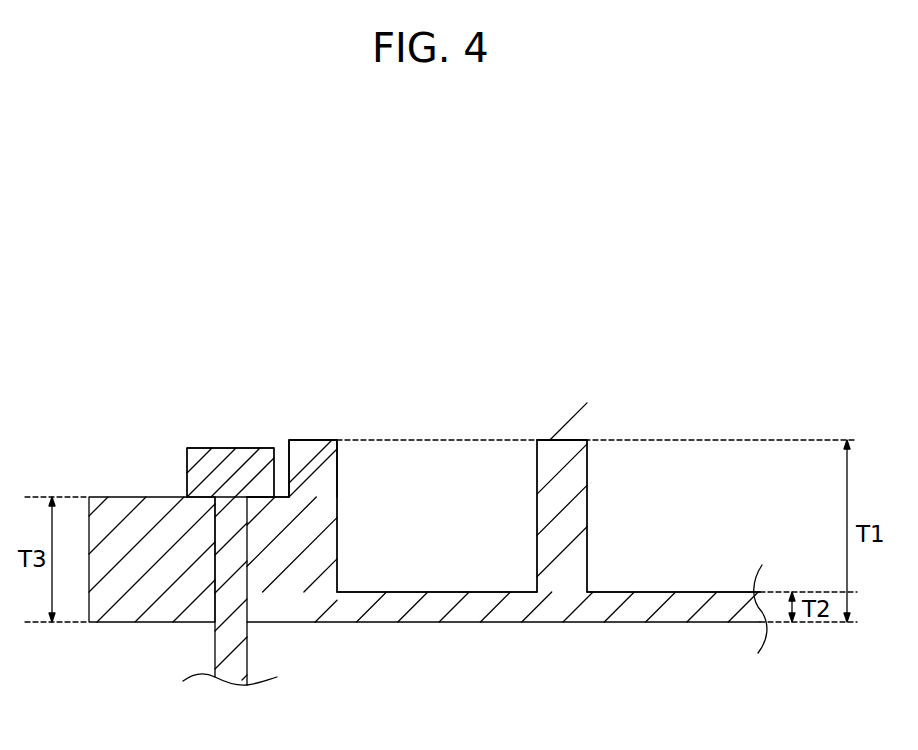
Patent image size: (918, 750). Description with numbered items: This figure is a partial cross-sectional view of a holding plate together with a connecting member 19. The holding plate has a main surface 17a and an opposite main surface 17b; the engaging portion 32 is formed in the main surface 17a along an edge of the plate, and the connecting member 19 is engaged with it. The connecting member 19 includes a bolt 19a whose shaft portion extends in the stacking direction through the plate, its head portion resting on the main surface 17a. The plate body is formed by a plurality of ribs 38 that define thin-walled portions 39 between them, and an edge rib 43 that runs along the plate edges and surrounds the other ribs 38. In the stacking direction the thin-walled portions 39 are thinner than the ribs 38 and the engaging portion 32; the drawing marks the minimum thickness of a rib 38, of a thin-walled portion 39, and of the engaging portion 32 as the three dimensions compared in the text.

The main surface 17a is at (547, 441).
The main surface 17b is at (507, 529).
The connecting member 19 is at (188, 526).
The bolt 19a is at (226, 456).
The engaging portion 32 is at (128, 545).
The rib 38 is at (310, 446).
The thin-walled portion 39 is at (453, 613).
The edge rib 43 is at (326, 443).